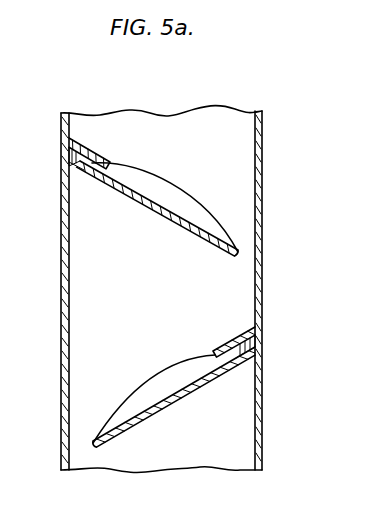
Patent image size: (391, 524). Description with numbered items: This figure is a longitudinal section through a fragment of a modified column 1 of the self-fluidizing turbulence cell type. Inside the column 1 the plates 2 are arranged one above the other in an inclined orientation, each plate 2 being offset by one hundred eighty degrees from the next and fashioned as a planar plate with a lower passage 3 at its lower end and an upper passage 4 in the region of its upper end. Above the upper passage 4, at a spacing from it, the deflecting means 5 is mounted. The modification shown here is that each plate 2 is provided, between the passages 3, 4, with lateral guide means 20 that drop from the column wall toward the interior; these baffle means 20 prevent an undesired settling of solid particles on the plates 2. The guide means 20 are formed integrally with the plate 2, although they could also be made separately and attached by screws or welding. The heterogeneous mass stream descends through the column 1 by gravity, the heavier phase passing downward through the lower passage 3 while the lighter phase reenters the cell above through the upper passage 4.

The column 1 is at (262, 166).
The plate 2 is at (168, 220).
The lower passage 3 is at (74, 451).
The upper passage 4 is at (88, 168).
The deflecting means 5 is at (96, 158).
The lateral guide means 20 is at (203, 213).